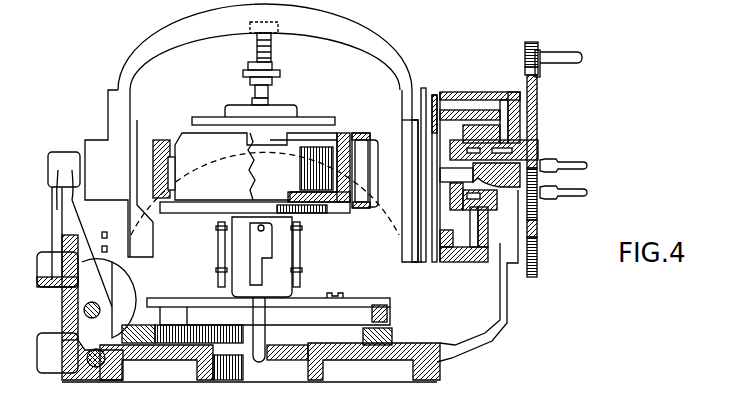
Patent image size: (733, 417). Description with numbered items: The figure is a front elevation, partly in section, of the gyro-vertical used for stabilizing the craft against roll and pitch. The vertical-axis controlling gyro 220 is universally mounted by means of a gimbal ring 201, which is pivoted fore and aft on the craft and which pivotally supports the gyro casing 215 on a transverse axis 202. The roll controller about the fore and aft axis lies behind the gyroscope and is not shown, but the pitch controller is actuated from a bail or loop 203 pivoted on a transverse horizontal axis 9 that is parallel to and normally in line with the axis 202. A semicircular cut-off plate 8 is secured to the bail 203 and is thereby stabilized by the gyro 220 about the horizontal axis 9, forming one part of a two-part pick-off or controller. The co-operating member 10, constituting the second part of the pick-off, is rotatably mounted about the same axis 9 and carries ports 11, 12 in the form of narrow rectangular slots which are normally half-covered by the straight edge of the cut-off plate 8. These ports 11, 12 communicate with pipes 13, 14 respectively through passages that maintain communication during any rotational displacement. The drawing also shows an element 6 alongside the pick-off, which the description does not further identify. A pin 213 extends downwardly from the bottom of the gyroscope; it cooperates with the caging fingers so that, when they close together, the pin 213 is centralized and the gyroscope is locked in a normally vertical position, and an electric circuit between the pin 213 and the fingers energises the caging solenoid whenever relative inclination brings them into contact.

The gear shaft 6 is at (535, 270).
The semicircular cut-off plate 8 is at (433, 262).
The horizontal axis 9 is at (80, 160).
The co-operating member 10 is at (427, 88).
The port 11 is at (443, 92).
The port 12 is at (442, 247).
The pipe 13 is at (570, 162).
The pipe 14 is at (557, 195).
The gimbal ring 201 is at (364, 210).
The transverse axis 202 is at (170, 199).
The bail 203 is at (380, 83).
The pin 213 is at (261, 365).
The gyro casing 215 is at (323, 133).
The gyro 220 is at (180, 127).